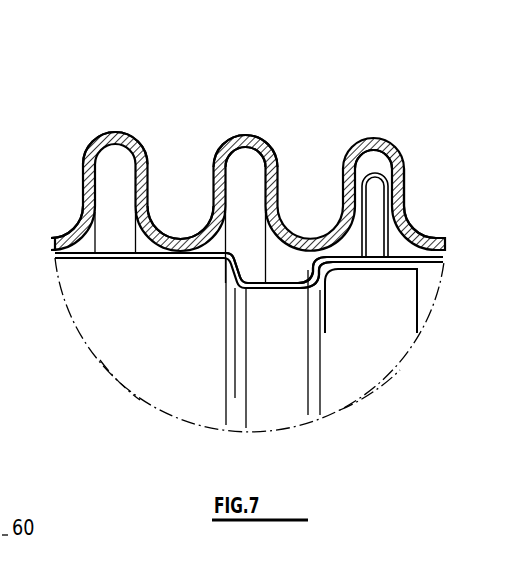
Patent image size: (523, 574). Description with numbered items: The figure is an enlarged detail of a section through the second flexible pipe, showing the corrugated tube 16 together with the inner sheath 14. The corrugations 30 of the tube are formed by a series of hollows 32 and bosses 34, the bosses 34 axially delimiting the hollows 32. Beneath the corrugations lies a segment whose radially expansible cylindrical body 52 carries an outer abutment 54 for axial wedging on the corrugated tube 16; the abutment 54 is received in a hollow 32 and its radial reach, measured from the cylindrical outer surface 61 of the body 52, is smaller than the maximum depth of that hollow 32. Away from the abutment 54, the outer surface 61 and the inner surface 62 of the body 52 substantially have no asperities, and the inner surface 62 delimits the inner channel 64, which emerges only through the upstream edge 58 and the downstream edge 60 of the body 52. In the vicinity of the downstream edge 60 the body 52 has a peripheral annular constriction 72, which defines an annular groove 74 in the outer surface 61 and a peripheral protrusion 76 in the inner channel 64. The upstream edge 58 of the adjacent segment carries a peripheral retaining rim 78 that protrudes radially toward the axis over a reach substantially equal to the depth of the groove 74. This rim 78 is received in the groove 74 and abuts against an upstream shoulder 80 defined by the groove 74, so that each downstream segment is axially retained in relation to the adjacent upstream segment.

The inner sheath 14 is at (397, 390).
The corrugated tube 16 is at (275, 123).
The corrugations 30 is at (112, 140).
The hollows 32 is at (233, 148).
The bosses 34 is at (173, 250).
The cylindrical body 52 is at (90, 303).
The outer abutment 54 is at (408, 225).
The upstream edge 58 is at (290, 288).
The downstream edge 60 is at (417, 295).
The outer surface 61 is at (110, 250).
The inner surface 62 is at (130, 367).
The inner channel 64 is at (188, 393).
The peripheral annular constriction 72 is at (258, 302).
The annular groove 74 is at (273, 280).
The peripheral protrusion 76 is at (302, 358).
The peripheral retaining rim 78 is at (296, 272).
The upstream shoulder 80 is at (312, 281).